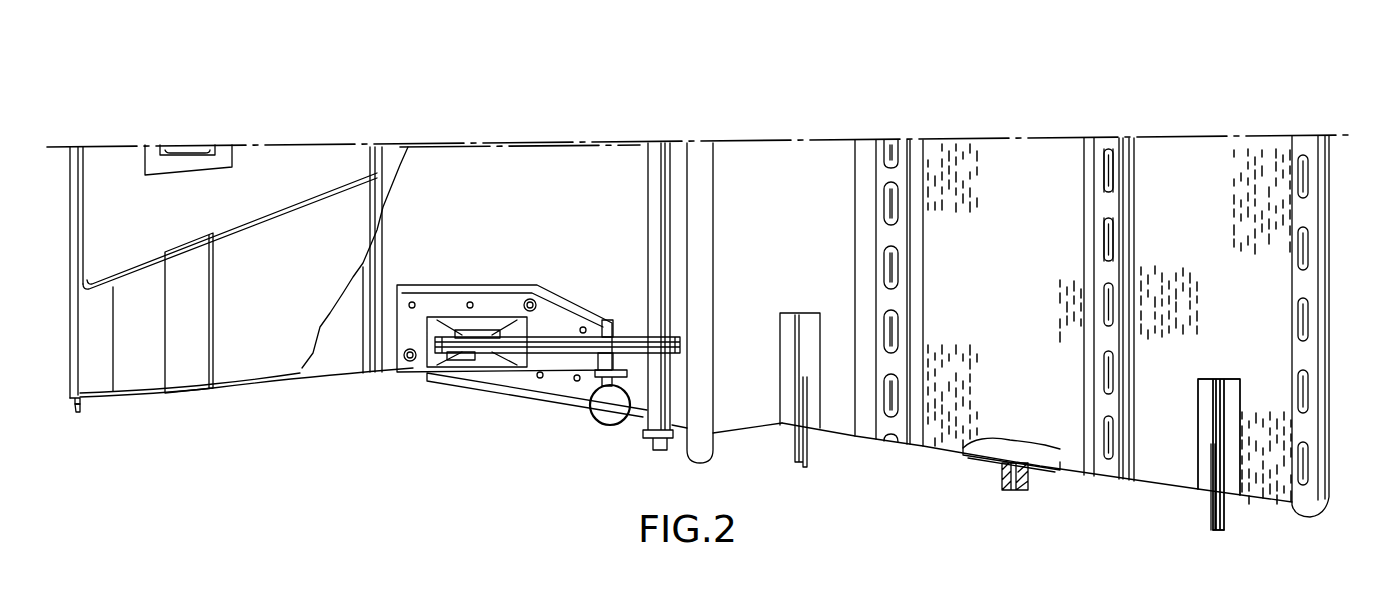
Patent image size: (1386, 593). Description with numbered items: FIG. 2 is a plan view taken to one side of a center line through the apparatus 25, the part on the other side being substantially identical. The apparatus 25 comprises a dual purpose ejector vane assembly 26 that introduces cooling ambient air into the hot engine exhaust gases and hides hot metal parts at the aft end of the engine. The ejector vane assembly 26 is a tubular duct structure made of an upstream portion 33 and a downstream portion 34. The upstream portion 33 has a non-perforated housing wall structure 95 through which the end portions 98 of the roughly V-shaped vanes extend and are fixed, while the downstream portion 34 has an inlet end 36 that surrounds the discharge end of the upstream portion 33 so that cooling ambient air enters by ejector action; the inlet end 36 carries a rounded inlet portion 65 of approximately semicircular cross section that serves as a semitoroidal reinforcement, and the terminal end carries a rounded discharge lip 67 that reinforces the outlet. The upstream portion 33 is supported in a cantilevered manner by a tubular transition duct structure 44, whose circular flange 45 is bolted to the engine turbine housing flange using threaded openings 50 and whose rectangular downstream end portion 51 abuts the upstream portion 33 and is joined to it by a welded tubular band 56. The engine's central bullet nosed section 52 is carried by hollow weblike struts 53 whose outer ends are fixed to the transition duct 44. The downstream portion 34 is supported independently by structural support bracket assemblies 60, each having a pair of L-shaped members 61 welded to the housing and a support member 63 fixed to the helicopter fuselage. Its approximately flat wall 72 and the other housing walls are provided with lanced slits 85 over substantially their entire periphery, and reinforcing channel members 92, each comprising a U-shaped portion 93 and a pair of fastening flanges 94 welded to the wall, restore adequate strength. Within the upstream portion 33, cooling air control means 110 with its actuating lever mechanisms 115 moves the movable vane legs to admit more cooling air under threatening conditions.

The apparatus 25 is at (1240, 117).
The ejector vane assembly 26 is at (752, 470).
The upstream portion 33 is at (586, 140).
The downstream portion 34 is at (1003, 138).
The inlet end 36 is at (687, 177).
The tubular transition duct structure 44 is at (272, 383).
The flange 45 is at (78, 413).
The threaded openings 50 is at (76, 404).
The downstream end portion 51 is at (350, 363).
The central bullet nosed section 52 is at (290, 216).
The hollow weblike struts 53 is at (190, 375).
The tubular band 56 is at (380, 366).
The structural support bracket assemblies 60 is at (810, 445).
The L-shaped members 61 is at (1231, 386).
The support member 63 is at (1211, 505).
The rounded inlet portion 65 is at (688, 443).
The rounded discharge lip 67 is at (1333, 498).
The wall 72 is at (968, 455).
The slits 85 is at (1201, 315).
The reinforcing channel members 92 is at (878, 140).
The U-shaped portion 93 is at (1107, 140).
The fastening flanges 94 is at (1086, 170).
The housing wall structure 95 is at (487, 163).
The end portions 98 is at (547, 400).
The cooling air control means 110 is at (507, 393).
The actuating lever mechanisms 115 is at (560, 340).